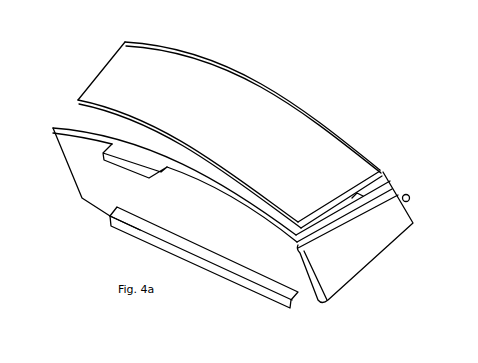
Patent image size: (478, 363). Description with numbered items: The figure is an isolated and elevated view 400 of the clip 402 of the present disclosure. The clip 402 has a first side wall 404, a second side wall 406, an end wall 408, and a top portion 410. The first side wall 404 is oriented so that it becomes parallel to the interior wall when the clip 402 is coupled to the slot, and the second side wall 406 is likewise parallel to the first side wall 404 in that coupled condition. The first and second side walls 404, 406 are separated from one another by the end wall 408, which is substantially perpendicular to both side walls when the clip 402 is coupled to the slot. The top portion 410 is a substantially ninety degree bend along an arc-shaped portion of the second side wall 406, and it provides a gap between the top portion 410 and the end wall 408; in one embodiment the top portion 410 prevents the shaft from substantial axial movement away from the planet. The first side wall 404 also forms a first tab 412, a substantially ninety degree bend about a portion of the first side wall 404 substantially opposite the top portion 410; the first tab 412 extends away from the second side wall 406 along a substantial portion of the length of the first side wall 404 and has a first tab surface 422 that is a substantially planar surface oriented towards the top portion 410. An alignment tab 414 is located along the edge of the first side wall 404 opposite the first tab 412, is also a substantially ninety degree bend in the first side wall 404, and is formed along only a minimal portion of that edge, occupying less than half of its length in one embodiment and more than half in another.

The isolated and elevated view 400 is at (249, 62).
The clip 402 is at (73, 95).
The first side wall 404 is at (204, 220).
The second side wall 406 is at (339, 131).
The end wall 408 is at (359, 256).
The top portion 410 is at (222, 119).
The first tab 412 is at (207, 268).
The alignment tab 414 is at (125, 162).
The first tab surface 422 is at (133, 229).